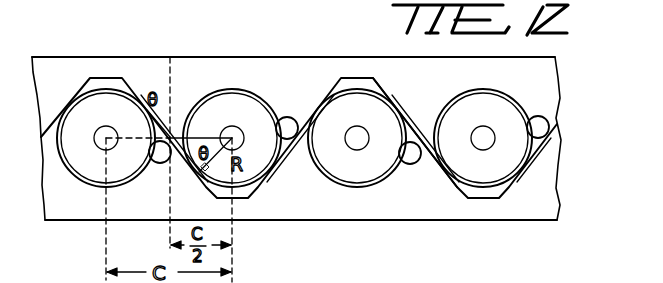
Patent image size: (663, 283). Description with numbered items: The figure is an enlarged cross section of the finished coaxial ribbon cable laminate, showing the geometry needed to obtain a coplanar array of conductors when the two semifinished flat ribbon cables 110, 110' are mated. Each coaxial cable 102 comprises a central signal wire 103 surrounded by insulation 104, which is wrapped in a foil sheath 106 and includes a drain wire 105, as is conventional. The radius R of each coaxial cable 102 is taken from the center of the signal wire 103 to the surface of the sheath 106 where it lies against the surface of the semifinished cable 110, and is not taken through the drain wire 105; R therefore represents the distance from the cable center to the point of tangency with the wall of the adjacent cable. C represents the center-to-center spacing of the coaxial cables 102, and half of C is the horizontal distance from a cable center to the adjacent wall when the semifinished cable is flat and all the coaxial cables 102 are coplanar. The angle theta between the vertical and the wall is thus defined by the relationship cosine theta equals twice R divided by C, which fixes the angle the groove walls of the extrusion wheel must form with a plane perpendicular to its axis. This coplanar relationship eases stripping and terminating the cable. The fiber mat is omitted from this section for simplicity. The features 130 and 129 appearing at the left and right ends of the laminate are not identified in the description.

The semifinished flat ribbon cable 110 is at (293, 48).
The semifinished flat ribbon cable 110' is at (301, 235).
The left end of strip 130 is at (41, 170).
The right end of strip 129 is at (528, 170).
The insulation 104 is at (484, 103).
The coaxial cable 102 is at (521, 105).
The signal wire 103 is at (492, 144).
The drain wire 105 is at (536, 132).
The foil sheath 106 is at (437, 122).